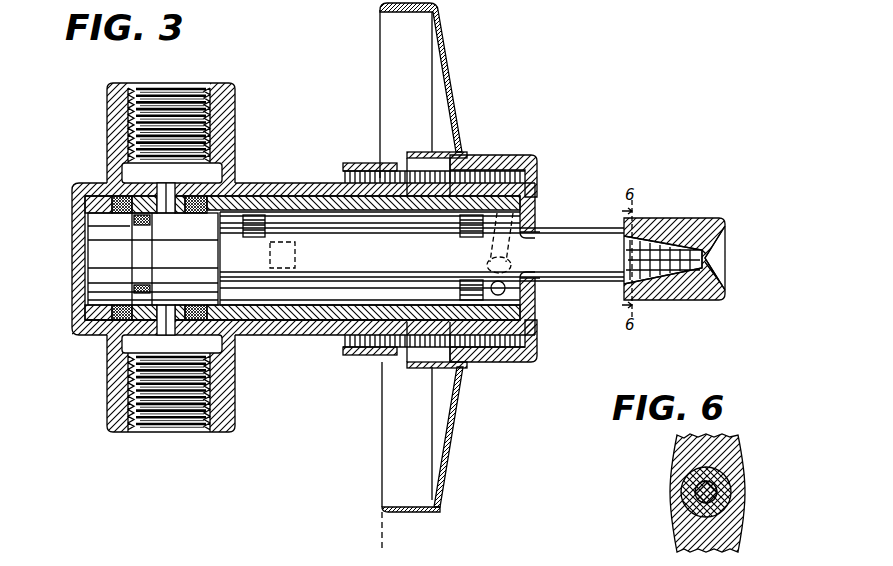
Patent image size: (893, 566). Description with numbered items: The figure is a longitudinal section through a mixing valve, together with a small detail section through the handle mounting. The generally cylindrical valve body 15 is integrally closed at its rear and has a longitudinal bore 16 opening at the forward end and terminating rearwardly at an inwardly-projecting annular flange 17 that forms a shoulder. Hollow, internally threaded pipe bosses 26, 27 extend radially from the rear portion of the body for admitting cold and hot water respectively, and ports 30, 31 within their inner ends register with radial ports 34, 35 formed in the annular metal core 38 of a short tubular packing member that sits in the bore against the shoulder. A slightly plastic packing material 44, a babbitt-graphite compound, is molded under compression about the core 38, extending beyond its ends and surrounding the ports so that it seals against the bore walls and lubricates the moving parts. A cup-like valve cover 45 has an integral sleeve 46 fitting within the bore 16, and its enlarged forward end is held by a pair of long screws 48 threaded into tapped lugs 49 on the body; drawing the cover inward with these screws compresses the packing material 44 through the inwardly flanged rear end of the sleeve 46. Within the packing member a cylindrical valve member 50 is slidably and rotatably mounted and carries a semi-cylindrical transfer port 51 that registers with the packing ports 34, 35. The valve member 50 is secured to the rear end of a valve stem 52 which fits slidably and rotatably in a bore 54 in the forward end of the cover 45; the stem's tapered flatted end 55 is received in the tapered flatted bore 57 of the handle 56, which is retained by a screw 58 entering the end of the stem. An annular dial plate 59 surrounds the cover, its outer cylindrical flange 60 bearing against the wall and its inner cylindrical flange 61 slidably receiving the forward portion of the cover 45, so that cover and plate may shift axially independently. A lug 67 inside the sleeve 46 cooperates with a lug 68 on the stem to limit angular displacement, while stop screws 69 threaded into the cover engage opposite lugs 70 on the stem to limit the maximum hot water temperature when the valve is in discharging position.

In FIG. 3, the valve body 15 is at (266, 176).
In FIG. 3, the longitudinal bore 16 is at (322, 318).
In FIG. 3, the annular flange 17 is at (100, 202).
In FIG. 3, the pipe boss 26 is at (178, 412).
In FIG. 3, the pipe boss 27 is at (186, 92).
In FIG. 3, the port 30 is at (163, 332).
In FIG. 3, the port 31 is at (165, 192).
In FIG. 3, the radial port 34 is at (173, 313).
In FIG. 3, the radial port 35 is at (170, 205).
In FIG. 3, the annular metal core 38 is at (133, 215).
In FIG. 3, the packing material 44 is at (122, 202).
In FIG. 3, the valve cover 45 is at (538, 200).
In FIG. 3, the sleeve 46 is at (288, 322).
In FIG. 3, the screws 48 is at (400, 342).
In FIG. 3, the tapped lugs 49 is at (350, 165).
In FIG. 3, the valve member 50 is at (110, 250).
In FIG. 3, the transfer port 51 is at (152, 248).
In FIG. 3, the valve stem 52 is at (598, 262).
In FIG. 3, the bore 54 is at (540, 232).
In FIG. 6, the tapered flatted end 55 is at (728, 500).
In FIG. 3, the handle 56 is at (690, 222).
In FIG. 6, the handle 56 is at (725, 445).
In FIG. 3, the tapered flatted bore 57 is at (654, 280).
In FIG. 6, the tapered flatted bore 57 is at (722, 484).
In FIG. 3, the screw 58 is at (718, 262).
In FIG. 6, the screw 58 is at (700, 492).
In FIG. 3, the dial plate 59 is at (489, 80).
In FIG. 3, the cylindrical flange 60 is at (386, 510).
In FIG. 3, the cylindrical flange 61 is at (426, 152).
In FIG. 3, the lug 67 is at (298, 252).
In FIG. 3, the lug 68 is at (254, 233).
In FIG. 3, the stop screws 69 is at (518, 252).
In FIG. 3, the lugs 70 is at (472, 280).